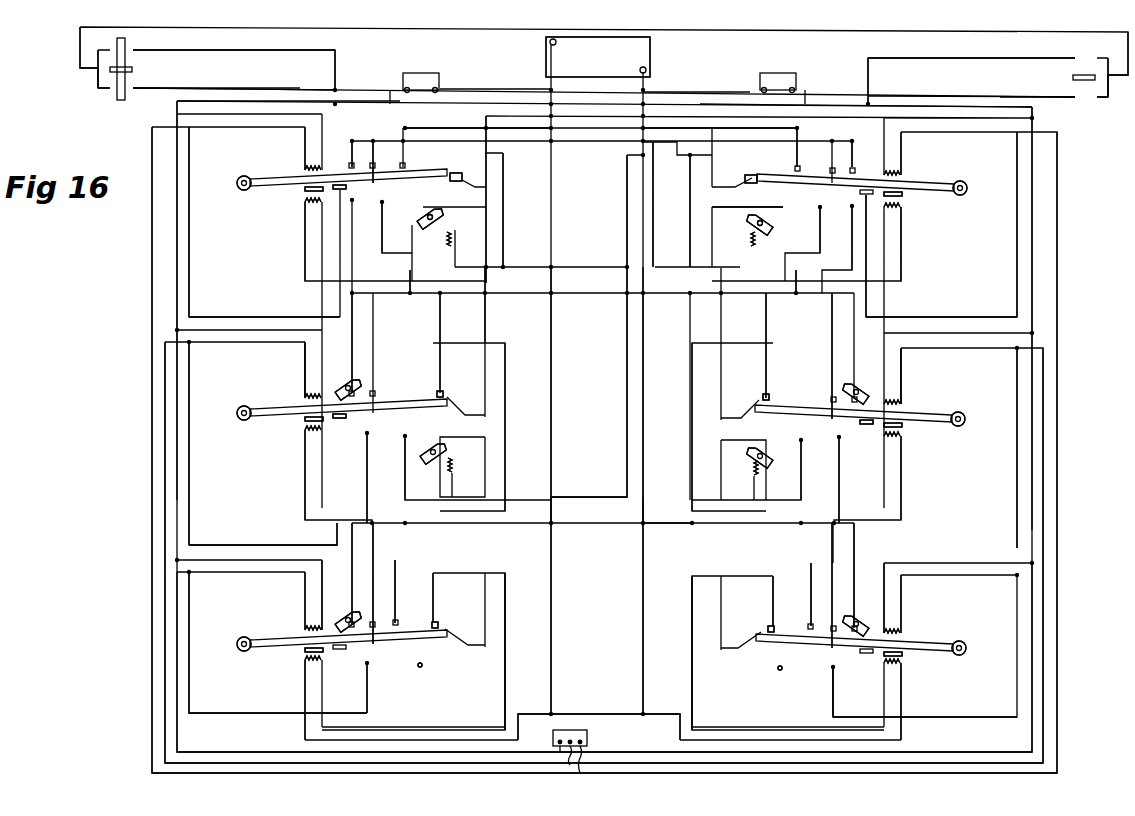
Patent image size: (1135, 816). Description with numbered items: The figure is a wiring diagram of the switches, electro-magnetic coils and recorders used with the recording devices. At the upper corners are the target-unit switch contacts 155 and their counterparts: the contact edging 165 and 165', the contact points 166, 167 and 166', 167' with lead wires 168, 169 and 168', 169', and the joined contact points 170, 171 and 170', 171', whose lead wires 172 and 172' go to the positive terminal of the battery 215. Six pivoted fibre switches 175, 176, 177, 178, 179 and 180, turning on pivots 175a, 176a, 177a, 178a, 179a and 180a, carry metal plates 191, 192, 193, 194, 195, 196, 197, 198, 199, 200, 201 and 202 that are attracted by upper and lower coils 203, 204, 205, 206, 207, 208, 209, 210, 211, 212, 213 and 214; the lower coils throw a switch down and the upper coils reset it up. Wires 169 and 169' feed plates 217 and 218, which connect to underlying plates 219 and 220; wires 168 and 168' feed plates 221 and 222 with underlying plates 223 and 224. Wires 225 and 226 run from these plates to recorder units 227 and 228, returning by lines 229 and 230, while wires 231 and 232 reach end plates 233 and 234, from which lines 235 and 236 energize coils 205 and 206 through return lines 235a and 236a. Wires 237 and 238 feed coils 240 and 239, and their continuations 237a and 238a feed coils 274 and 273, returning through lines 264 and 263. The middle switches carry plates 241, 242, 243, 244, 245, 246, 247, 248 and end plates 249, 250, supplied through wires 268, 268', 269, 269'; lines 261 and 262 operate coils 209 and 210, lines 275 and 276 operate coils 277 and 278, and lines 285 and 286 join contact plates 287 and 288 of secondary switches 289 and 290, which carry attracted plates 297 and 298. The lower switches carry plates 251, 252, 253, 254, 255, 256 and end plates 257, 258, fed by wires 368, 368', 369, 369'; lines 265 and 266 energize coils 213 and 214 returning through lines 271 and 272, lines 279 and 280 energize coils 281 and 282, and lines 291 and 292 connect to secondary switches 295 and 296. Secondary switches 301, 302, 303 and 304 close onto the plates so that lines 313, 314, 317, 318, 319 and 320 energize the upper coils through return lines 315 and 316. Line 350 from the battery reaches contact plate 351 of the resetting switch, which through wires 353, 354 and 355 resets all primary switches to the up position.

The switch 155 is at (120, 100).
The metal strip or edging 165 is at (143, 69).
The electrical contact point 166 is at (216, 98).
The electrical contact point 167 is at (234, 39).
The lead wire 168 is at (234, 78).
The lead wire 169 is at (357, 71).
The electrical contact point 170 is at (90, 87).
The electrical contact point 171 is at (103, 58).
The lead wire 172 is at (56, 47).
The metal strip or edging 165' is at (1063, 75).
The electrical contact point 166' is at (1037, 107).
The electrical contact point 167' is at (971, 45).
The lead wire 168' is at (971, 83).
The lead wire 169' is at (896, 81).
The electrical contact point 170' is at (1116, 94).
The electrical contact point 171' is at (1110, 64).
The lead wire 172' is at (1121, 65).
The switch 175 is at (288, 184).
The pivot 175a is at (224, 184).
The switch 176 is at (948, 172).
The pivot 176a is at (968, 189).
The switch 177 is at (290, 397).
The pivot 177a is at (237, 411).
The switch 178 is at (938, 414).
The pivot 178a is at (966, 419).
The switch 179 is at (290, 630).
The pivot 179a is at (237, 640).
The switch 180 is at (940, 645).
The pivot 180a is at (966, 646).
The metal plate 191 is at (308, 168).
The metal plate 192 is at (900, 176).
The metal plate 193 is at (305, 191).
The metal plate 194 is at (902, 196).
The metal plate 195 is at (306, 397).
The metal plate 196 is at (905, 404).
The metal plate 197 is at (305, 421).
The metal plate 198 is at (902, 428).
The metal plate 199 is at (304, 630).
The metal plate 200 is at (905, 632).
The metal plate 201 is at (305, 652).
The metal plate 202 is at (902, 656).
The electro-magnetic coil 203 is at (305, 160).
The electro-magnetic coil 204 is at (901, 170).
The electro-magnetic coil 205 is at (303, 210).
The electro-magnetic coil 206 is at (902, 212).
The electro-magnetic coil 207 is at (305, 385).
The electro-magnetic coil 208 is at (898, 395).
The electro-magnetic coil 209 is at (305, 437).
The electro-magnetic coil 210 is at (900, 444).
The electro-magnetic coil 211 is at (318, 628).
The electro-magnetic coil 212 is at (895, 630).
The electro-magnetic coil 213 is at (305, 668).
The electro-magnetic coil 214 is at (901, 672).
The battery 215 is at (650, 55).
The metal contact plate 217 is at (352, 150).
The metal contact plate 218 is at (852, 150).
The contact plate 219 is at (340, 190).
The contact plate 220 is at (853, 206).
The contact plate 221 is at (376, 160).
The contact plate 222 is at (797, 164).
The contact plate 223 is at (382, 204).
The contact plate 224 is at (820, 208).
The wire 225 is at (392, 86).
The wire 226 is at (805, 88).
The recorder unit 227 is at (420, 73).
The recorder unit 228 is at (775, 73).
The neutral return line 229 is at (470, 90).
The neutral return line 230 is at (704, 82).
The wire 231 is at (430, 128).
The wire 232 is at (797, 128).
The end plate 233 is at (464, 168).
The end plate 234 is at (752, 168).
The line 235 is at (488, 205).
The line 236 is at (690, 200).
The neutral or return line 235a is at (600, 312).
The neutral or return line 236a is at (660, 296).
The wire 237 is at (503, 165).
The wire 238 is at (671, 204).
The line 237a is at (690, 496).
The line 238a is at (610, 497).
The electro-magnetic coil 239 is at (465, 240).
The electro-magnetic coil 240 is at (736, 241).
The contact plate 241 is at (362, 360).
The contact plate 242 is at (830, 380).
The contact plate 243 is at (436, 380).
The contact plate 244 is at (768, 380).
The contact plate 245 is at (366, 436).
The contact plate 246 is at (839, 439).
The contact plate 247 is at (405, 440).
The contact plate 248 is at (801, 441).
The end plate 249 is at (444, 392).
The end plate 250 is at (762, 394).
The contact plate 251 is at (395, 572).
The contact plate 252 is at (811, 580).
The contact plate 253 is at (433, 600).
The contact plate 254 is at (773, 610).
The contact plate 255 is at (394, 684).
The contact plate 256 is at (805, 688).
The end plate 257 is at (440, 622).
The end plate 258 is at (766, 627).
The line 261 is at (506, 380).
The line 262 is at (692, 385).
The line 263 is at (596, 523).
The line 264 is at (690, 523).
The line 265 is at (505, 683).
The line 266 is at (692, 680).
The wire 268 is at (428, 288).
The wire 268' is at (769, 294).
The wire 269 is at (277, 304).
The wire 269' is at (927, 267).
The line 271 is at (604, 714).
The line 272 is at (670, 702).
The electro-magnetic coil 273 is at (465, 466).
The electro-magnetic coil 274 is at (752, 460).
The line 275 is at (340, 340).
The line 276 is at (870, 350).
The electro-magnetic coil 277 is at (340, 380).
The electro-magnetic coil 278 is at (865, 382).
The line 279 is at (337, 546).
The line 280 is at (846, 560).
The electro-magnetic coil 281 is at (305, 610).
The electro-magnetic coil 282 is at (888, 610).
The line 285 is at (486, 318).
The line 286 is at (692, 343).
The contact plate 287 is at (428, 214).
The contact plate 288 is at (765, 218).
The secondary switch 289 is at (414, 228).
The secondary switch 290 is at (768, 230).
The line 291 is at (505, 548).
The line 292 is at (705, 553).
The secondary switch 295 is at (426, 462).
The secondary switch 296 is at (768, 475).
The metal plate 297 is at (440, 214).
The metal plate 298 is at (750, 220).
The secondary switch 301 is at (357, 420).
The secondary switch 302 is at (866, 424).
The secondary switch 303 is at (350, 640).
The secondary switch 304 is at (852, 640).
The line 313 is at (189, 292).
The line 314 is at (1017, 292).
The line 315 is at (242, 101).
The line 316 is at (745, 84).
The line 317 is at (189, 524).
The line 318 is at (1017, 524).
The line 319 is at (367, 712).
The line 320 is at (833, 710).
The line 350 is at (551, 616).
The contact plate 351 is at (587, 736).
The wire 353 is at (177, 634).
The wire 354 is at (165, 410).
The wire 355 is at (152, 246).
The wire 368 is at (415, 583).
The wire 368' is at (787, 585).
The wire 369 is at (328, 574).
The wire 369' is at (871, 575).